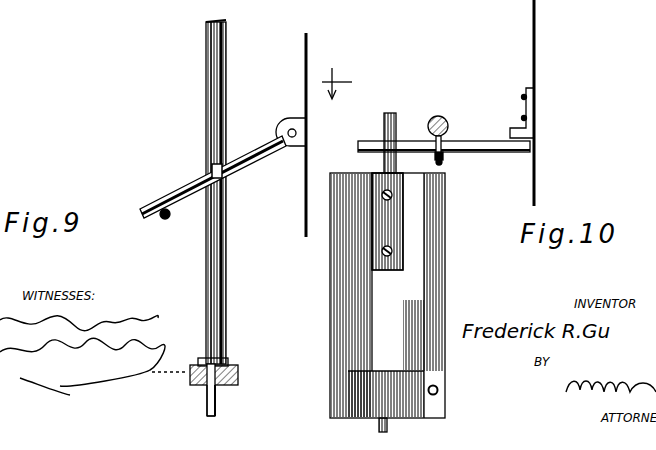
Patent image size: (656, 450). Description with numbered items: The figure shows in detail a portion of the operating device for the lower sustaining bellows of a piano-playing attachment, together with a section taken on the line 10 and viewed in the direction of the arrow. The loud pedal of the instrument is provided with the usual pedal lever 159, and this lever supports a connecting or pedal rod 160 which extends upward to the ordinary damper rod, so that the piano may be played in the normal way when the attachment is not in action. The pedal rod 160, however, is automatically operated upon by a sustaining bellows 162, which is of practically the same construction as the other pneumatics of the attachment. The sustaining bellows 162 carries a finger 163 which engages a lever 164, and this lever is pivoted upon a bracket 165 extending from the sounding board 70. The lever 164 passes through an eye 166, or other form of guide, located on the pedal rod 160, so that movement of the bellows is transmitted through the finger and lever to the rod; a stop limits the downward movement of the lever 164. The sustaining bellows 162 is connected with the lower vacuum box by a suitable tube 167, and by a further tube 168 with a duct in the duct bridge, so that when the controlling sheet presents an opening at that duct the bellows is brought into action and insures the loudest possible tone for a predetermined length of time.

In FIG. 9, the section line 10 is at (148, 80).
In FIG. 9, the sounding board 70 is at (307, 48).
In FIG. 10, the sounding board 70 is at (535, 72).
In FIG. 9, the pedal lever 159 is at (238, 375).
In FIG. 9, the pedal rod 160 is at (225, 220).
In FIG. 10, the pedal rod 160 is at (447, 118).
In FIG. 10, the sustaining bellows 162 is at (418, 283).
In FIG. 10, the finger 163 is at (396, 120).
In FIG. 9, the lever 164 is at (252, 162).
In FIG. 10, the lever 164 is at (518, 141).
In FIG. 9, the bracket 165 is at (285, 118).
In FIG. 10, the bracket 165 is at (536, 112).
In FIG. 9, the eye 166 is at (212, 171).
In FIG. 10, the eye 166 is at (443, 160).
In FIG. 10, the tube 167 is at (438, 389).
In FIG. 10, the tube 168 is at (379, 426).